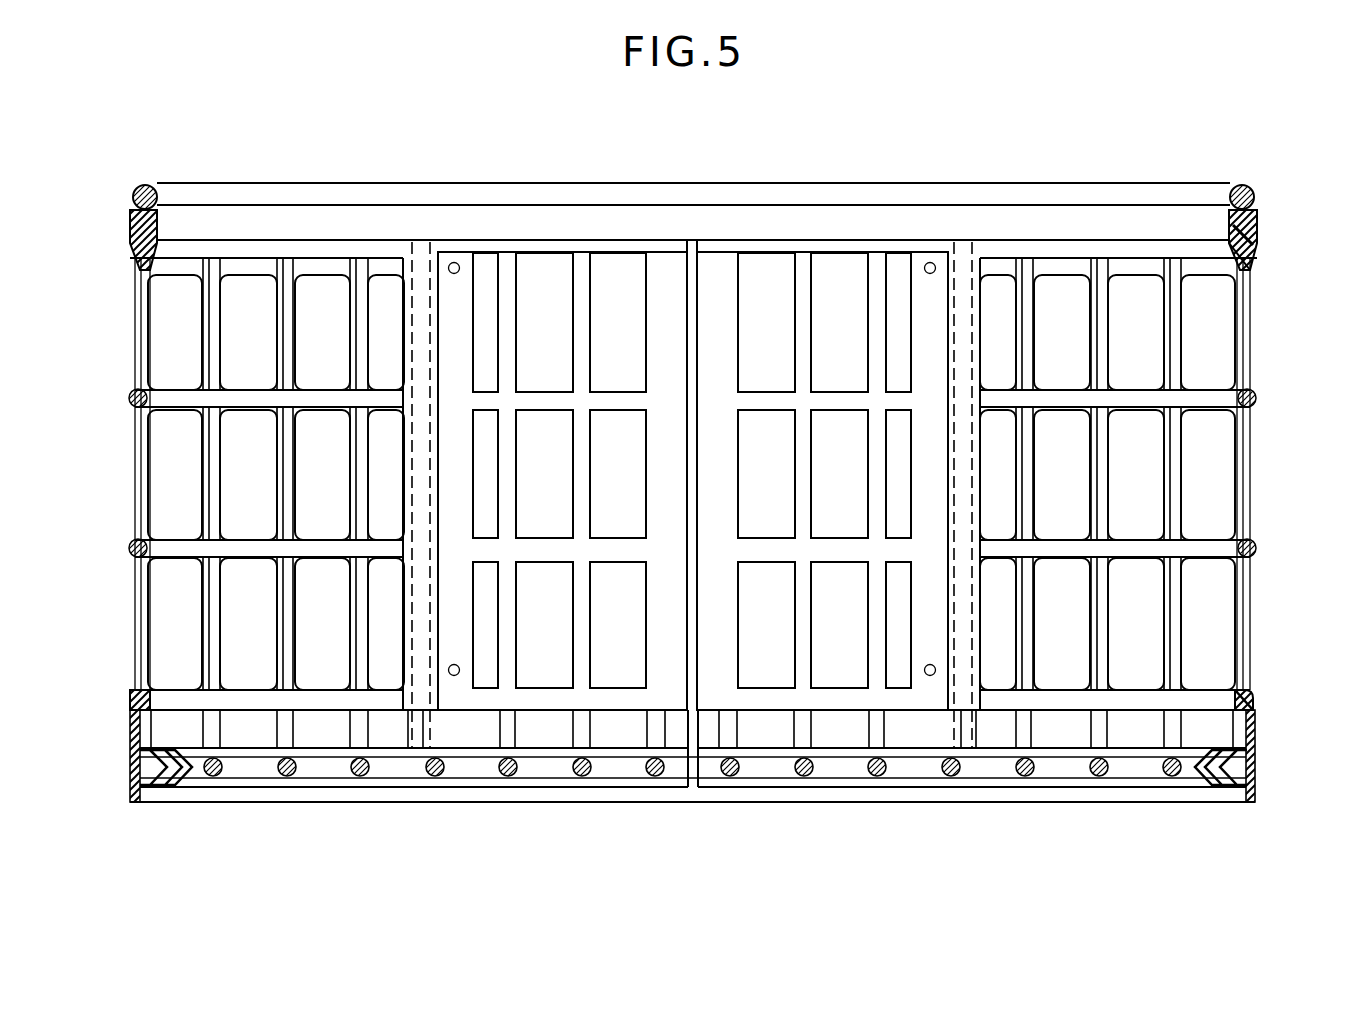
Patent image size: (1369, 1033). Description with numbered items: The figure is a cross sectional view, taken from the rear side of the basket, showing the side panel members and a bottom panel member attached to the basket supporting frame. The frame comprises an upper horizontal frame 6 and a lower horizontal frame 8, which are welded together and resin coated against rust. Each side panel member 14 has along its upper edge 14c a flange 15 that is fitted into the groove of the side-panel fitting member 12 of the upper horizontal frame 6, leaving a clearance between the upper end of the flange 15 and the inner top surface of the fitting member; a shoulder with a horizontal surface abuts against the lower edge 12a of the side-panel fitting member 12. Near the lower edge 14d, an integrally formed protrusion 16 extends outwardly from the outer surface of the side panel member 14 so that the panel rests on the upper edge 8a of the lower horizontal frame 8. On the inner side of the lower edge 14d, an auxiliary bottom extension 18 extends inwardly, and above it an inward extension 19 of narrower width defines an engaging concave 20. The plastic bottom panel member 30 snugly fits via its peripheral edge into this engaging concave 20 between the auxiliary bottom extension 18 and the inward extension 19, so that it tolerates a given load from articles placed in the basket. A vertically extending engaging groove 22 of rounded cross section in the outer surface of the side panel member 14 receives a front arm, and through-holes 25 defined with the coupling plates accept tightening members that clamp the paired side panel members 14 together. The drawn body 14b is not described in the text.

The upper horizontal frame 6 is at (1242, 185).
The side-panel fitting member 12 is at (1258, 218).
The lower edge of the side-panel fitting member 12a is at (1230, 250).
The flange 15 is at (1258, 228).
The side panel member 14 is at (1268, 427).
The side wall lattice 14b is at (1252, 480).
The upper edge of the side panel member 14c is at (1253, 252).
The lower edge of the side panel member 14d is at (1240, 765).
The protrusion 16 is at (1250, 692).
The lower horizontal frame 8 is at (1257, 775).
The upper edge of the lower horizontal frame 8a is at (1253, 700).
The auxiliary bottom extension 18 is at (245, 780).
The inward extension 19 is at (192, 757).
The engaging concave 20 is at (1195, 765).
The engaging groove 22 is at (420, 242).
The through-holes 25 is at (455, 262).
The bottom panel member 30 is at (895, 780).